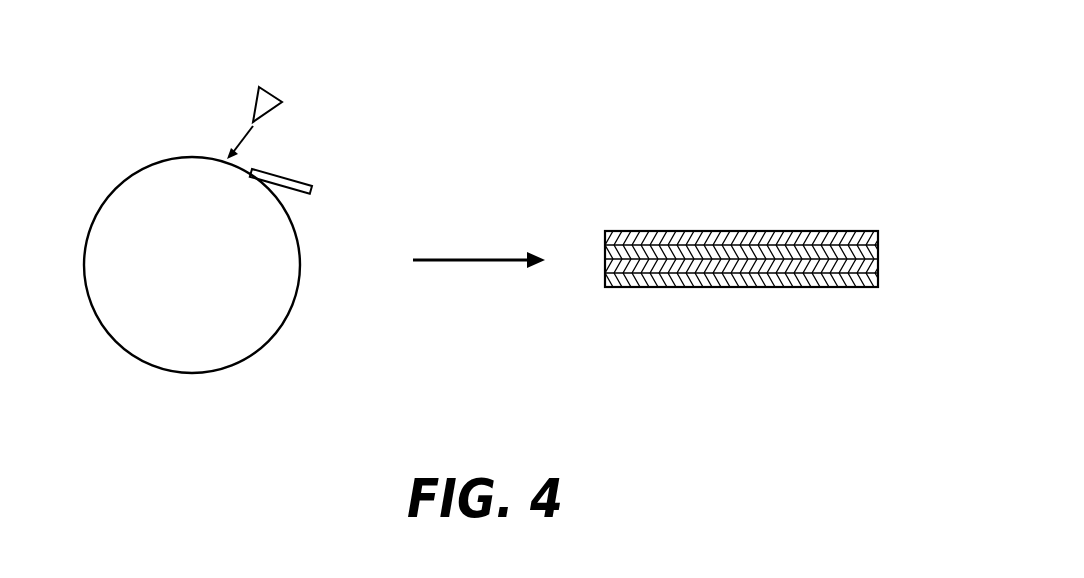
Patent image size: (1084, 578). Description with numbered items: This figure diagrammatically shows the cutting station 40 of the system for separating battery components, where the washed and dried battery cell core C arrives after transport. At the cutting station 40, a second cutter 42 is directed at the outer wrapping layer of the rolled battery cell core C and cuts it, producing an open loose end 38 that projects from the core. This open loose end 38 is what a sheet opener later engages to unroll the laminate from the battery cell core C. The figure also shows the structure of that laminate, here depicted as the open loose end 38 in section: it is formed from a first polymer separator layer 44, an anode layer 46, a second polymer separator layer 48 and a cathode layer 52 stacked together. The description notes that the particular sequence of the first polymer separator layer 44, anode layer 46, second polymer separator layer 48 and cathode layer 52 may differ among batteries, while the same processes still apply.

The cutting station 40 is at (100, 130).
The second cutter 42 is at (269, 101).
The open loose end 38 is at (283, 173).
The first polymer separator layer 44 is at (822, 231).
The anode layer 46 is at (605, 251).
The second polymer separator layer 48 is at (878, 265).
The cathode layer 52 is at (652, 287).
The battery cell core C is at (190, 373).